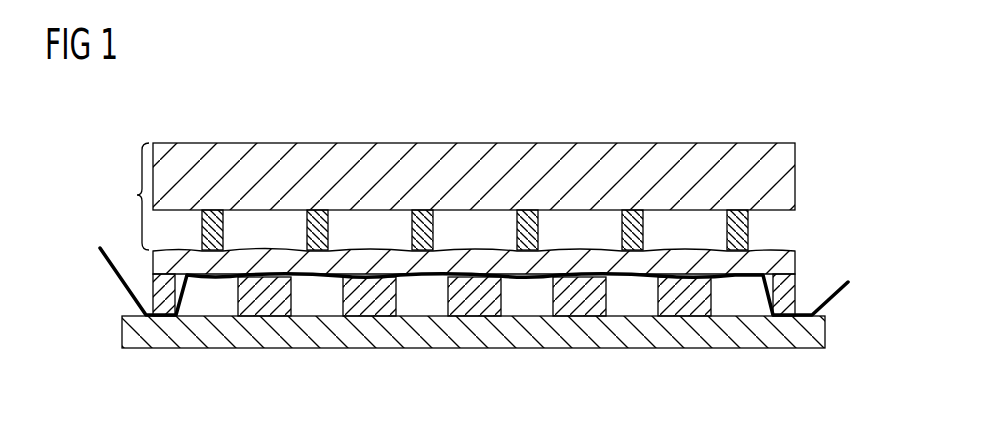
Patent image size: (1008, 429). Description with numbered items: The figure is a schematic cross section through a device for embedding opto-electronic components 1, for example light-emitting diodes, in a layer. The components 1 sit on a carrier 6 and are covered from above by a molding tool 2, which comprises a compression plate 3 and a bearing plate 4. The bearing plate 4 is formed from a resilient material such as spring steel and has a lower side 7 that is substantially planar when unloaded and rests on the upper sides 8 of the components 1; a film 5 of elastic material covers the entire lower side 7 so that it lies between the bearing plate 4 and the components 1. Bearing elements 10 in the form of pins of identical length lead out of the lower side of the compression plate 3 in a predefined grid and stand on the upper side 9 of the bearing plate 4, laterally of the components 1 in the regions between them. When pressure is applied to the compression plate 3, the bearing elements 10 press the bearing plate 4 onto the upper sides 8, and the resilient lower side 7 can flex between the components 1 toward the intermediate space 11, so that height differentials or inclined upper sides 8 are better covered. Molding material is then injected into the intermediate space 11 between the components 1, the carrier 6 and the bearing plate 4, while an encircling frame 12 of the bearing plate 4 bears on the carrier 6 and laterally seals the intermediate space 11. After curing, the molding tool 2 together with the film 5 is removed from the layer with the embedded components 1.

The opto-electronic component 1 is at (267, 306).
The molding tool 2 is at (133, 196).
The compression plate 3 is at (785, 172).
The bearing plate 4 is at (785, 260).
The film 5 is at (845, 293).
The carrier 6 is at (813, 337).
The lower side 7 is at (313, 290).
The upper side 8 is at (364, 270).
The upper side 9 is at (477, 243).
The bearing element 10 is at (210, 213).
The intermediate space 11 is at (641, 305).
The encircling frame 12 is at (164, 304).